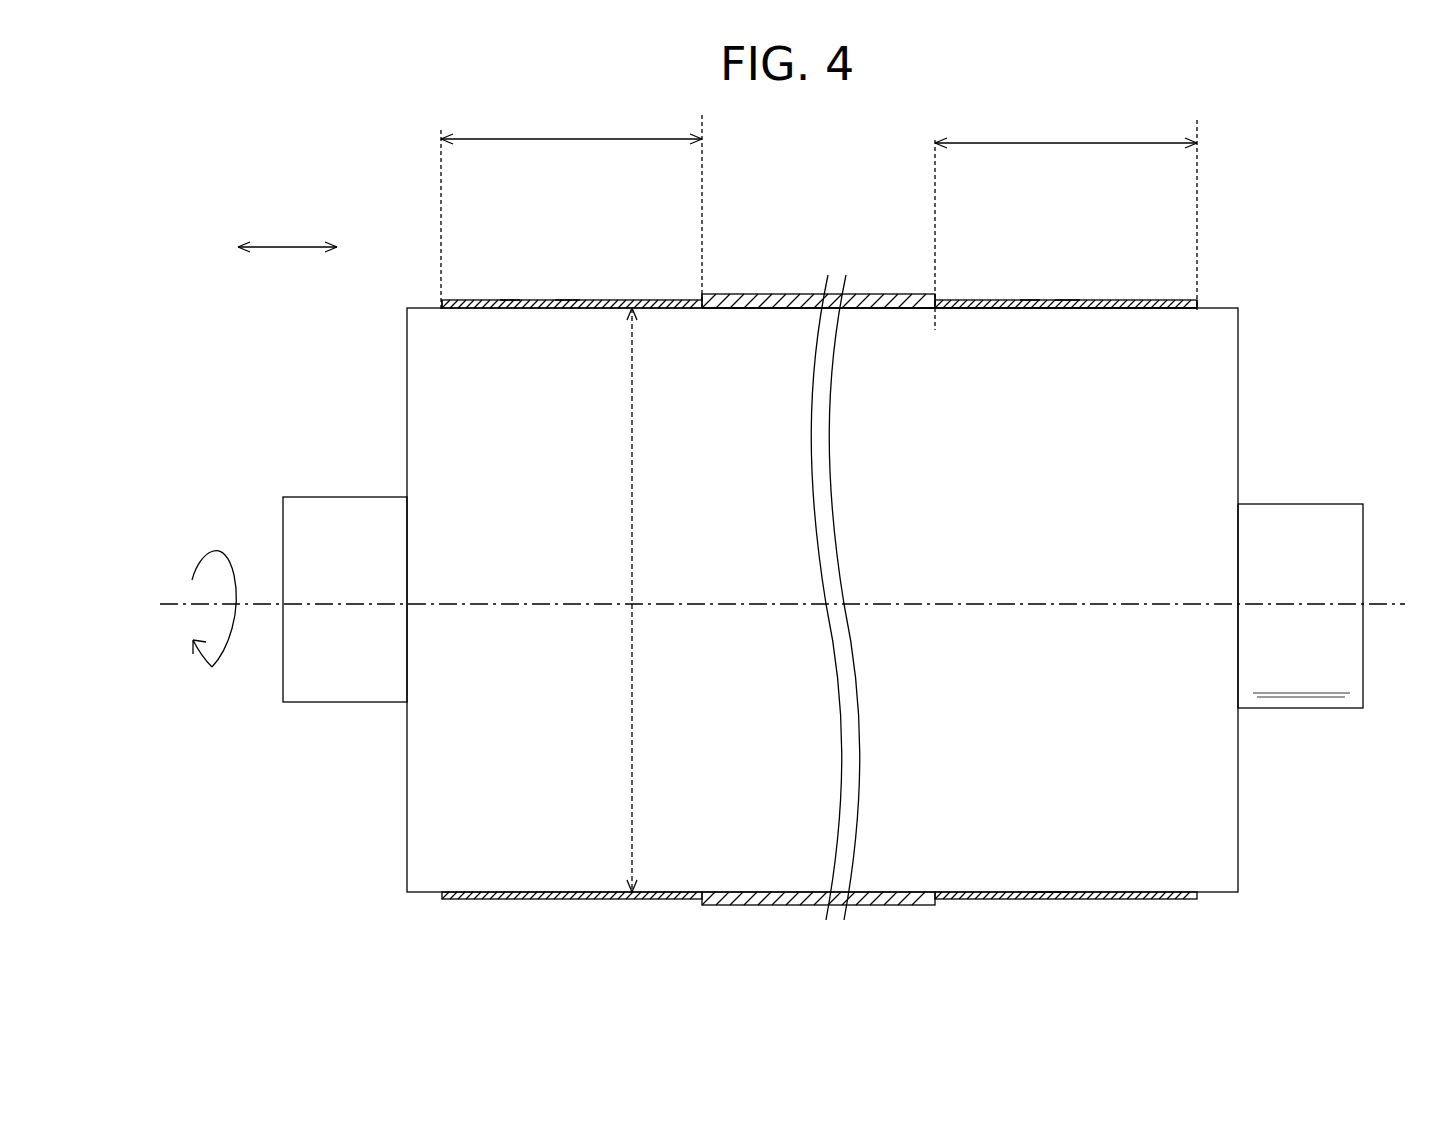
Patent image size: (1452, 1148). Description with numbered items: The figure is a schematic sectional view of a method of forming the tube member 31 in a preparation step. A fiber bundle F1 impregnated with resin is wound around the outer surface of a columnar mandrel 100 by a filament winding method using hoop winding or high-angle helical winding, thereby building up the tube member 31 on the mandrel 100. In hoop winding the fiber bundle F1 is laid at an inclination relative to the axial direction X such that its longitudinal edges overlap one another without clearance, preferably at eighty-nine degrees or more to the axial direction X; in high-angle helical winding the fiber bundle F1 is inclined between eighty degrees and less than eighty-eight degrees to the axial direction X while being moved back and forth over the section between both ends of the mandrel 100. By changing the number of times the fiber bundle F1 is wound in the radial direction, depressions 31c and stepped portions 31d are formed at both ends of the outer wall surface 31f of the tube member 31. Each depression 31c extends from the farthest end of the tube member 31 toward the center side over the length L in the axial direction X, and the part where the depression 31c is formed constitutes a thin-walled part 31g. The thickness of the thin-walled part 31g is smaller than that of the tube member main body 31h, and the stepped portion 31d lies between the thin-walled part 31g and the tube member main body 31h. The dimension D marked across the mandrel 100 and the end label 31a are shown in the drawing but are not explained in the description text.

The columnar mandrel 100 is at (1210, 393).
The tube member 31 is at (918, 300).
The end portion of sheet 31a is at (448, 300).
The depression 31c is at (565, 300).
The stepped portion 31d is at (696, 300).
The outer wall surface 31f is at (510, 300).
The thin-walled part 31g is at (545, 308).
The tube member main body 31h is at (783, 308).
The fiber bundle F1 is at (1047, 900).
The length L is at (819, 222).
The diameter D is at (622, 600).
The axial direction X is at (287, 236).